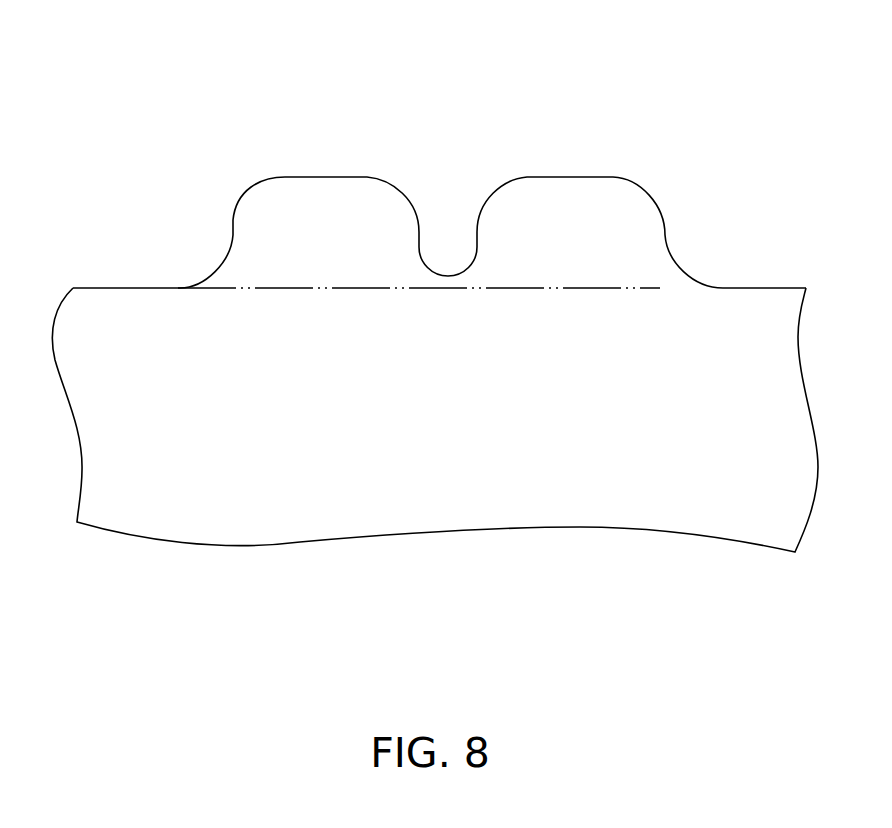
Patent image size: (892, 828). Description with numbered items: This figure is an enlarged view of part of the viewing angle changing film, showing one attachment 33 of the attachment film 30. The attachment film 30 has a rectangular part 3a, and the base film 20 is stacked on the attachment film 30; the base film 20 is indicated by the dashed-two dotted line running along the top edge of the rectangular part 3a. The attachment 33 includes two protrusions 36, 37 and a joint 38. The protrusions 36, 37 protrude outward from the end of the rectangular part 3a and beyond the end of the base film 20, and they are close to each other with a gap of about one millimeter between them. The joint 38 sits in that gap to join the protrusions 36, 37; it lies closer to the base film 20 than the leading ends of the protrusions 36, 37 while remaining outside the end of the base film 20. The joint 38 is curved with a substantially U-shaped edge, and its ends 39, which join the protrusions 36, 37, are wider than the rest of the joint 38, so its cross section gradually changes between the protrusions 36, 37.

The rectangular part 3a is at (430, 480).
The attachment film 30 is at (138, 285).
The attachment 33 is at (451, 149).
The protrusion 36 is at (332, 178).
The protrusion 37 is at (575, 178).
The joint 38 is at (447, 275).
The ends 39 is at (430, 253).
The base film 20 is at (657, 288).